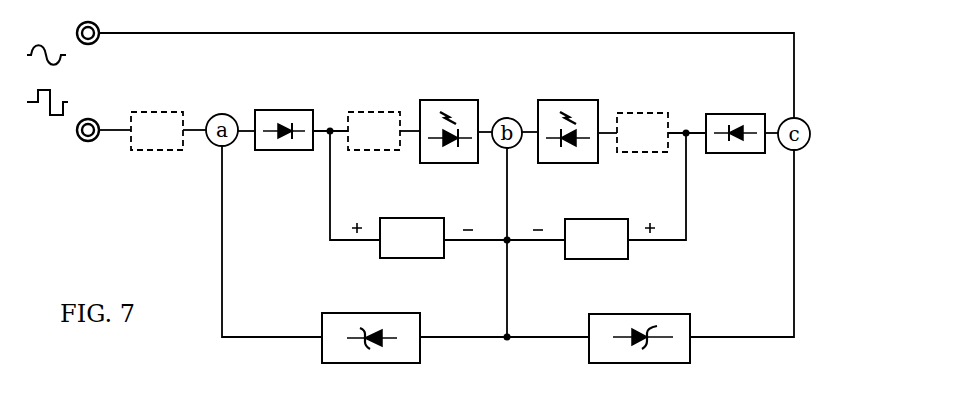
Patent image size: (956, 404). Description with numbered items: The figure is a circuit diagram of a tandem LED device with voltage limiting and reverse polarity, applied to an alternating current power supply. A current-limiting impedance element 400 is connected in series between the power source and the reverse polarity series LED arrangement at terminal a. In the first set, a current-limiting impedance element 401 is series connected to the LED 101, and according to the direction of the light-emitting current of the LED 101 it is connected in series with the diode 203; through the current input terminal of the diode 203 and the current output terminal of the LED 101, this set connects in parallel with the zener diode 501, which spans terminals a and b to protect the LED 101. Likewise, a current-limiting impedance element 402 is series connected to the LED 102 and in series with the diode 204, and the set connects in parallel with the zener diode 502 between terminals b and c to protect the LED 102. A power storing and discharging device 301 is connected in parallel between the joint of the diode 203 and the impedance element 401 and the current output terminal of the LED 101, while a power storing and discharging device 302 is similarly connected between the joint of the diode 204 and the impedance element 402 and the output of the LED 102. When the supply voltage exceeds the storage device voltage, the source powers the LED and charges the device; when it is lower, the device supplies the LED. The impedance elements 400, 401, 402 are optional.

The current-limiting impedance element 400 is at (148, 110).
The diode 203 is at (267, 110).
The current-limiting impedance element 401 is at (362, 110).
The LED 101 is at (442, 100).
The LED 102 is at (553, 100).
The current-limiting impedance element 402 is at (637, 113).
The diode 204 is at (717, 114).
The power storing and discharging device 301 is at (403, 228).
The power storing and discharging device 302 is at (577, 225).
The zener diode 501 is at (350, 312).
The zener diode 502 is at (620, 314).